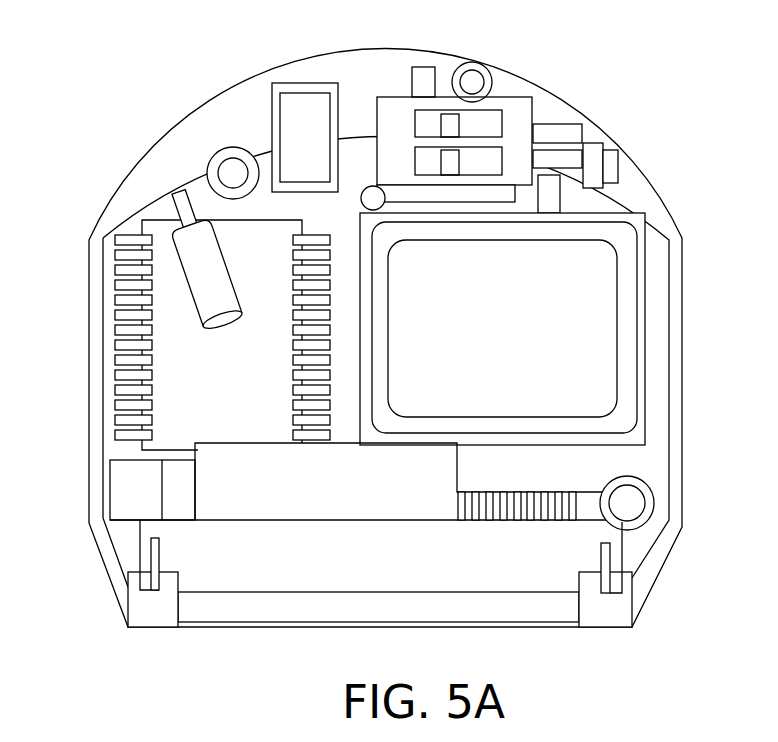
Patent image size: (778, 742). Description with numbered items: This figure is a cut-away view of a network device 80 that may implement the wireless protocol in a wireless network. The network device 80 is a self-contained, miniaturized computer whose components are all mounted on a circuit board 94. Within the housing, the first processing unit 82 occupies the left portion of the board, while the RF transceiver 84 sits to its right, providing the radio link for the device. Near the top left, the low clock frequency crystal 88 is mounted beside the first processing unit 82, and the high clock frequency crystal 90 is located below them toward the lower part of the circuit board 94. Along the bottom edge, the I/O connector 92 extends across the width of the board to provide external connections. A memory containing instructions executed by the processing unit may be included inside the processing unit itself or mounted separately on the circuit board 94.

The network device 80 is at (186, 35).
The first processing unit 82 is at (187, 398).
The RF transceiver 84 is at (575, 322).
The low clock frequency crystal 88 is at (183, 243).
The high clock frequency crystal 90 is at (217, 470).
The I/O connector 92 is at (335, 563).
The circuit board 94 is at (647, 177).